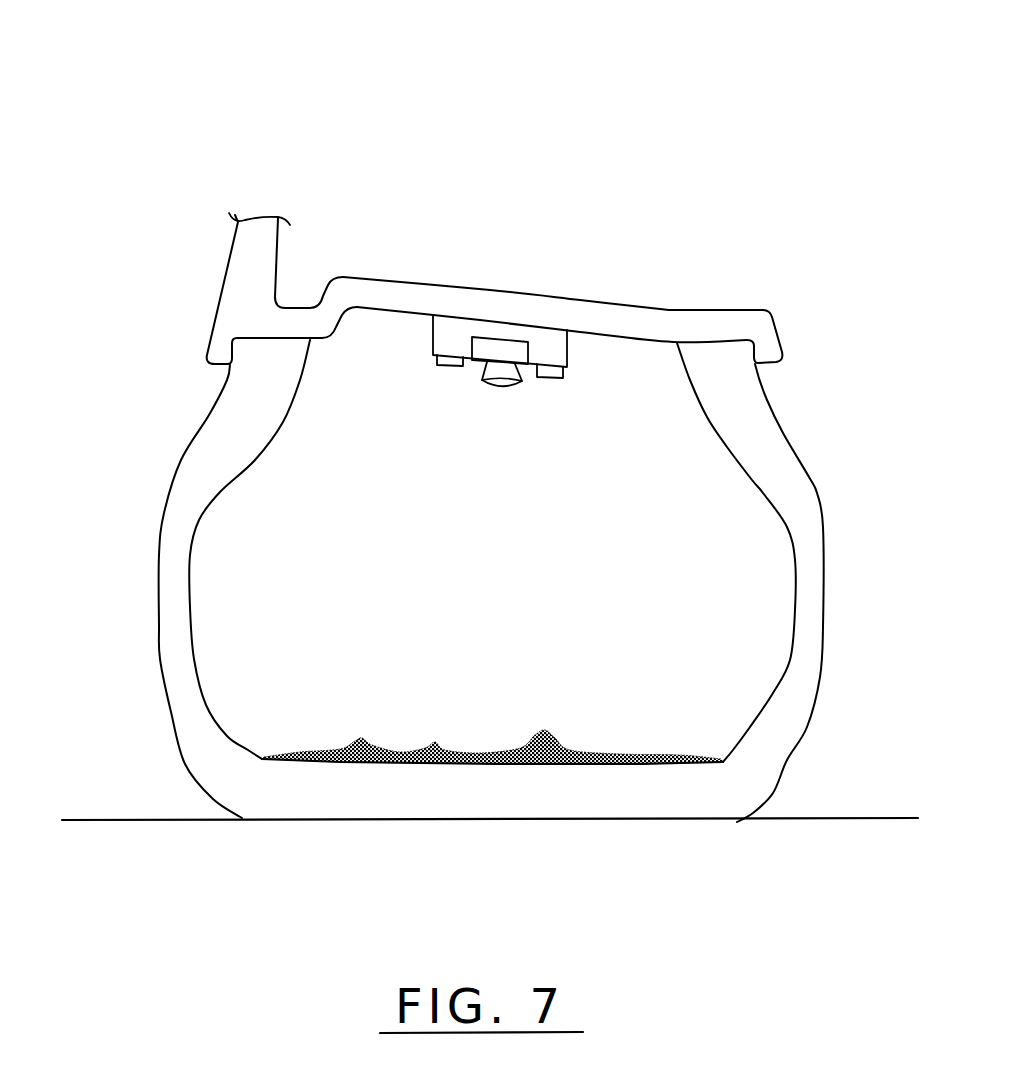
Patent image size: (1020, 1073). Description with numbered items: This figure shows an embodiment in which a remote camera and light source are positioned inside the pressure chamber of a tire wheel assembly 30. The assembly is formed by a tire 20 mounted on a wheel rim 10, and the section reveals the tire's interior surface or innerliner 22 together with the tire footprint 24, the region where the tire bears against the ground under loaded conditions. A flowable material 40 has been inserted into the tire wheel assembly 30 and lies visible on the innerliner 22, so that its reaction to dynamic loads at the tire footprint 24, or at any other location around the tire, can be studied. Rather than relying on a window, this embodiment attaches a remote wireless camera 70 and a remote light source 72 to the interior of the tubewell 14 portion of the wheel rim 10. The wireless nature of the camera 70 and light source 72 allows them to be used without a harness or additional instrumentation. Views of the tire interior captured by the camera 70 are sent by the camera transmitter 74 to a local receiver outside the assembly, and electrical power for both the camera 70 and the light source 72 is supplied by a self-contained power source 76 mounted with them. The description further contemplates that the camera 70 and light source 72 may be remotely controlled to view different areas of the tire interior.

The wheel rim 10 is at (248, 288).
The tubewell 14 is at (680, 310).
The tire 20 is at (773, 457).
The innerliner 22 is at (276, 746).
The tire footprint 24 is at (817, 817).
The tire wheel assembly 30 is at (388, 162).
The flowable material 40 is at (550, 738).
The remote wireless camera 70 is at (500, 387).
The remote light source 72 is at (448, 365).
The camera transmitter 74 is at (500, 348).
The power source 76 is at (452, 333).